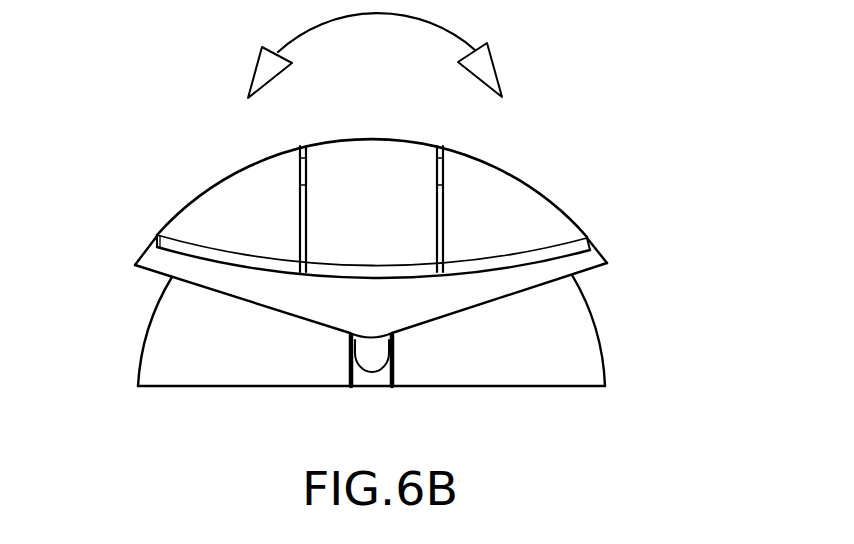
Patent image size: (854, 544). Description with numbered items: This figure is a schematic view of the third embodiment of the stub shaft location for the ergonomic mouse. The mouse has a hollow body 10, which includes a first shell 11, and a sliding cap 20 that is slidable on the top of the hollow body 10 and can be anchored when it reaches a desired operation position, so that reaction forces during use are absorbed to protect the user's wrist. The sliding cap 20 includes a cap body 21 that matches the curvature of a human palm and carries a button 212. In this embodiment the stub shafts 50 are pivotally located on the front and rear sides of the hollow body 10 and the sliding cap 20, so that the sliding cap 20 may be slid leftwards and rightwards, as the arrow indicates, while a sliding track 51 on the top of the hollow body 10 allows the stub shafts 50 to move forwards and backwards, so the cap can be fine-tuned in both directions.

The hollow body 10 is at (618, 333).
The first shell 11 is at (205, 357).
The sliding cap 20 is at (148, 226).
The cap body 21 is at (162, 263).
The button 212 is at (242, 193).
The stub shafts 50 is at (372, 357).
The sliding track 51 is at (387, 380).